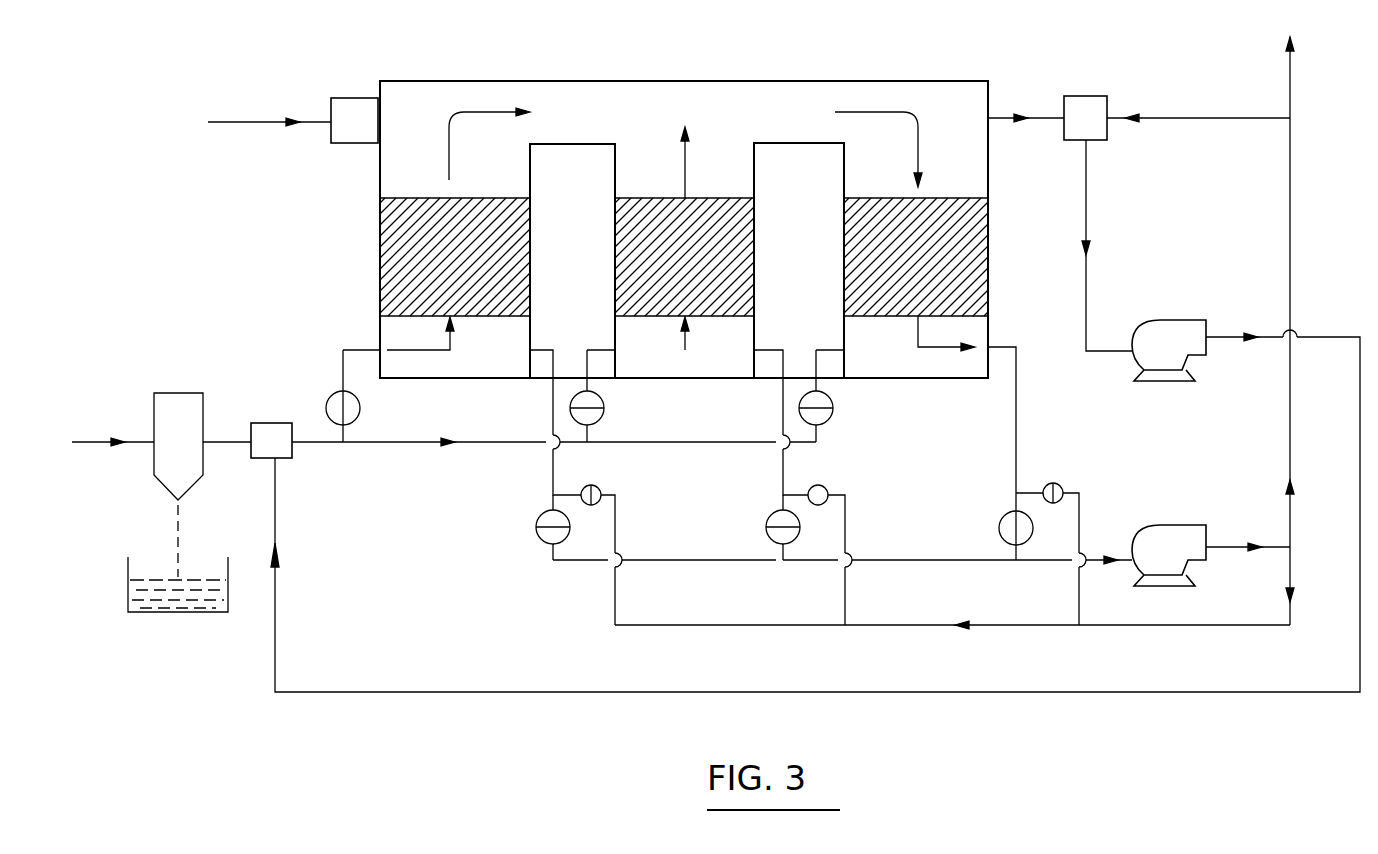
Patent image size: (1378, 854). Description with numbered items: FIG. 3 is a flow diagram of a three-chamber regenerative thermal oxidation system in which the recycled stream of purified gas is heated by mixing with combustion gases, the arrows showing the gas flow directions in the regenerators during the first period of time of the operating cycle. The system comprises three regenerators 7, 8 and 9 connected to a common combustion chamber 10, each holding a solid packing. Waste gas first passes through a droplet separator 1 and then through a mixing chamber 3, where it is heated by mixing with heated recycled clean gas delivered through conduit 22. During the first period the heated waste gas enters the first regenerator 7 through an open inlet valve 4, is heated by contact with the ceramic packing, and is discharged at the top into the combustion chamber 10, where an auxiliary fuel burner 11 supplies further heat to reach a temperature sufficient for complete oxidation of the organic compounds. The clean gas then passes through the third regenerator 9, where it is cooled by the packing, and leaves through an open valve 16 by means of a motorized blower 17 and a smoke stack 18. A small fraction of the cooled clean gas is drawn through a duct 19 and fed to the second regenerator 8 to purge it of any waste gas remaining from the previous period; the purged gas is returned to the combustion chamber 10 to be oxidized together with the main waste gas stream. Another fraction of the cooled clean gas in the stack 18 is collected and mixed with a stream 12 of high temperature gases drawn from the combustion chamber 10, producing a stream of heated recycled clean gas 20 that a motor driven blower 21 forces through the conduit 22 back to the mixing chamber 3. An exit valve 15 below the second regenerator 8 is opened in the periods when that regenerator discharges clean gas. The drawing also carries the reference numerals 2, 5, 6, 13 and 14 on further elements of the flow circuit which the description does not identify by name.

The droplet separator 1 is at (170, 398).
The collection tank 2 is at (128, 573).
The mixing chamber 3 is at (270, 425).
The inlet valve 4 is at (362, 412).
The valve 5 is at (605, 412).
The valve 6 is at (835, 412).
The first regenerator 7 is at (383, 243).
The second regenerator 8 is at (628, 245).
The third regenerator 9 is at (857, 245).
The combustion chamber 10 is at (637, 92).
The auxiliary fuel burner 11 is at (345, 105).
The stream of high temperature gases 12 is at (1043, 117).
The outlet unit 13 is at (1082, 100).
The valve 14 is at (536, 527).
The exit valve 15 is at (766, 527).
The valve 16 is at (999, 528).
The motorized blower 17 is at (1180, 525).
The smoke stack 18 is at (1291, 265).
The duct 19 is at (1045, 627).
The stream of heated recycled clean gas 20 is at (1090, 252).
The motor driven blower 21 is at (1195, 320).
The conduit 22 is at (278, 632).